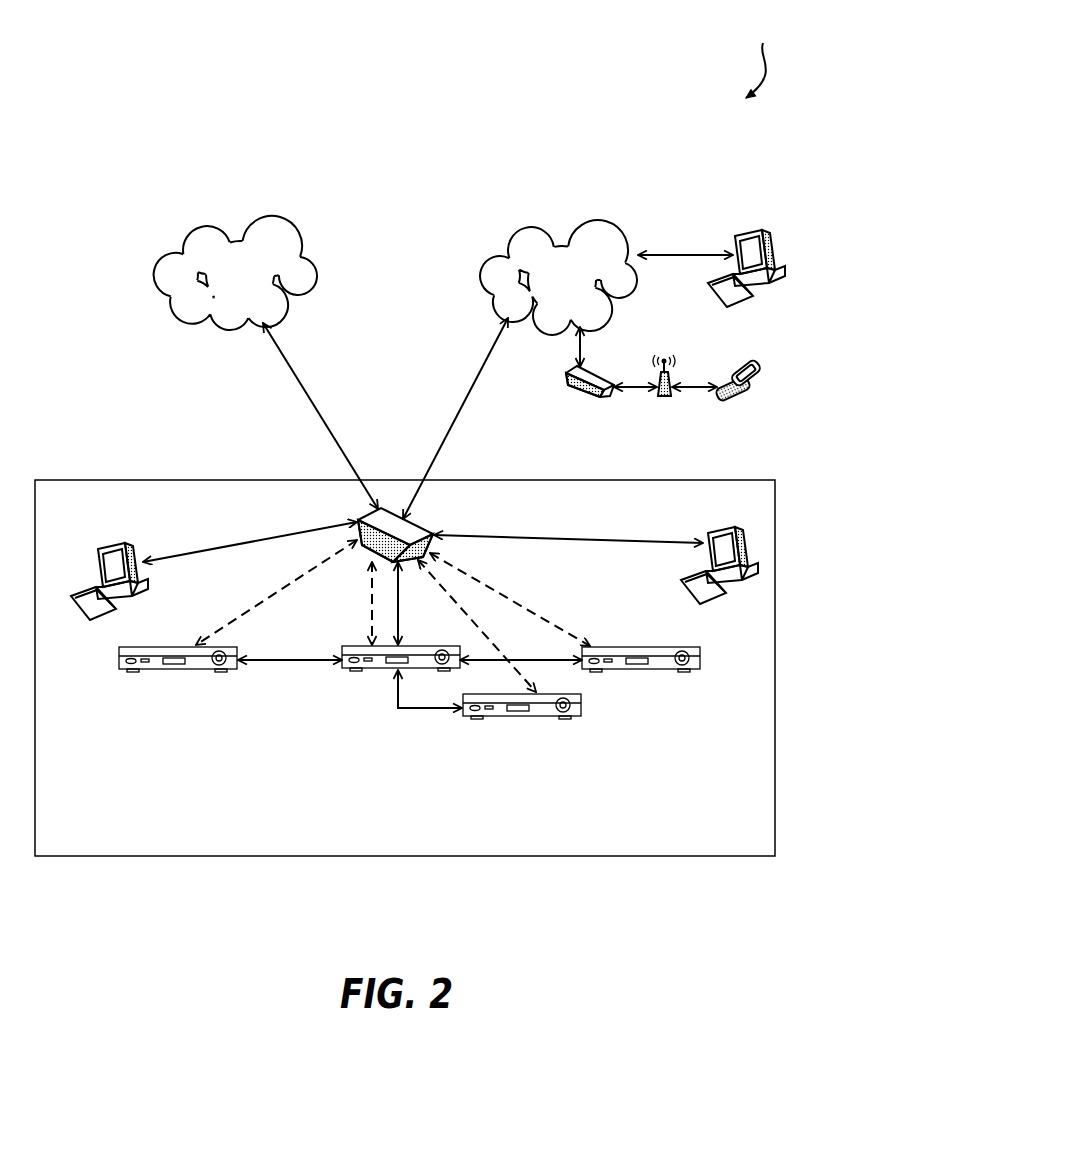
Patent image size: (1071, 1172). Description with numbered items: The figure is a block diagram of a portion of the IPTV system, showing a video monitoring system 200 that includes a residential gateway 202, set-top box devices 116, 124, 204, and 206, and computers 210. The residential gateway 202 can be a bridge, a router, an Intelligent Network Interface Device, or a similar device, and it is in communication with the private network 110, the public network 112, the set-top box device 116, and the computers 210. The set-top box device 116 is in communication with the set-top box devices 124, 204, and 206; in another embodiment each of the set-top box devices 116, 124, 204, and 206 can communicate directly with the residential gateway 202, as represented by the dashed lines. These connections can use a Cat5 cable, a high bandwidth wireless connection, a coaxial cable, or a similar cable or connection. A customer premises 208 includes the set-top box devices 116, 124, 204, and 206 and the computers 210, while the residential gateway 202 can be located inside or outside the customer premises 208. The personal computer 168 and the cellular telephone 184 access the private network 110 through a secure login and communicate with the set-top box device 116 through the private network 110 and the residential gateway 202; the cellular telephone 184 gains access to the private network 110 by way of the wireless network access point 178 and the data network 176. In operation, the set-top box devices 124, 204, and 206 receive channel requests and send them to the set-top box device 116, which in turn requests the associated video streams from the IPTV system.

The video monitoring system 200 is at (765, 58).
The public network 112 is at (268, 213).
The private network 110 is at (593, 216).
The personal computer 168 is at (754, 232).
The data network 176 is at (571, 379).
The wireless network access point 178 is at (659, 395).
The cellular telephone 184 is at (742, 399).
The customer premises 208 is at (200, 480).
The computers 210 is at (106, 549).
The residential gateway 202 is at (408, 526).
The set-top box device 124 is at (160, 659).
The set-top box device 116 is at (382, 668).
The set-top box device 206 is at (660, 665).
The set-top box device 204 is at (525, 716).